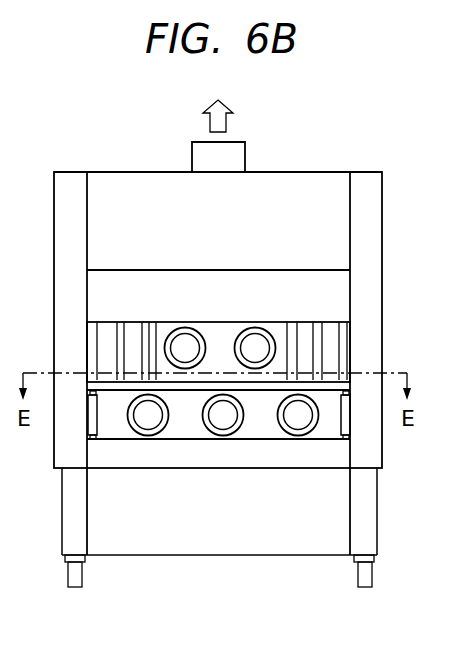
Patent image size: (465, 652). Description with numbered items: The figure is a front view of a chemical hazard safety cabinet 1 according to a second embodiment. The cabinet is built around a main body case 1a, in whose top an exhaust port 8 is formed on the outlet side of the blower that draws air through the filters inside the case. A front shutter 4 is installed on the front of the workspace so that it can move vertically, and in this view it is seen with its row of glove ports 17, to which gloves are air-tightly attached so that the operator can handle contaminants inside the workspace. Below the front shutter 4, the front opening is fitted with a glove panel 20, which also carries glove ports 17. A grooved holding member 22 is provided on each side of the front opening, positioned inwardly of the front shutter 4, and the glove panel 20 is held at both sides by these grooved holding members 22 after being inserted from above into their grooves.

The chemical hazard safety cabinet 1 is at (347, 158).
The main body case 1a is at (109, 172).
The exhaust port 8 is at (247, 153).
The front shutter 4 is at (318, 332).
The glove ports 17 is at (185, 353).
The grooved holding member 22 is at (98, 413).
The glove panel 20 is at (330, 422).